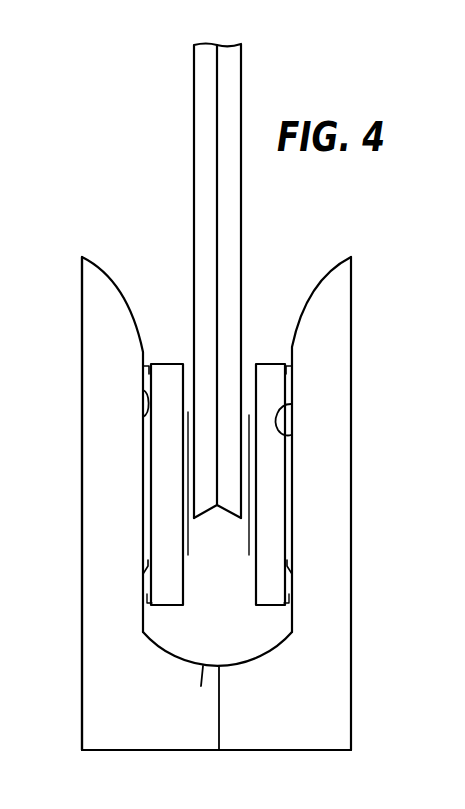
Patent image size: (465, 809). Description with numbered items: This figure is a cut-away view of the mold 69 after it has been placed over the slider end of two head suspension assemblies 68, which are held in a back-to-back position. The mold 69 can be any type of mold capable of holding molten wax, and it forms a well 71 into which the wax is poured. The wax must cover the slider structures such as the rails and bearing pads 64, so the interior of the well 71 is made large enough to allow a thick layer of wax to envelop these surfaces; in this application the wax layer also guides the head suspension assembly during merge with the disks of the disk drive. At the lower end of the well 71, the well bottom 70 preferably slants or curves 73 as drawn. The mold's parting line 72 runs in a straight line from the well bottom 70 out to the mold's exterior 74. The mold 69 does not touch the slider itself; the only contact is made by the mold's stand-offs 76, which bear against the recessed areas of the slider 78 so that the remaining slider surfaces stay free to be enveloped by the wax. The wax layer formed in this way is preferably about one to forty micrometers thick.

The bearing pads 64 is at (290, 597).
The head suspension assemblies 68 is at (193, 91).
The mold 69 is at (354, 640).
The well bottom 70 is at (201, 686).
The well 71 is at (168, 334).
The parting line 72 is at (220, 730).
The slant or curve 73 is at (156, 646).
The mold exterior 74 is at (82, 433).
The stand-offs 76 is at (294, 403).
The recessed areas of the slider 78 is at (296, 432).